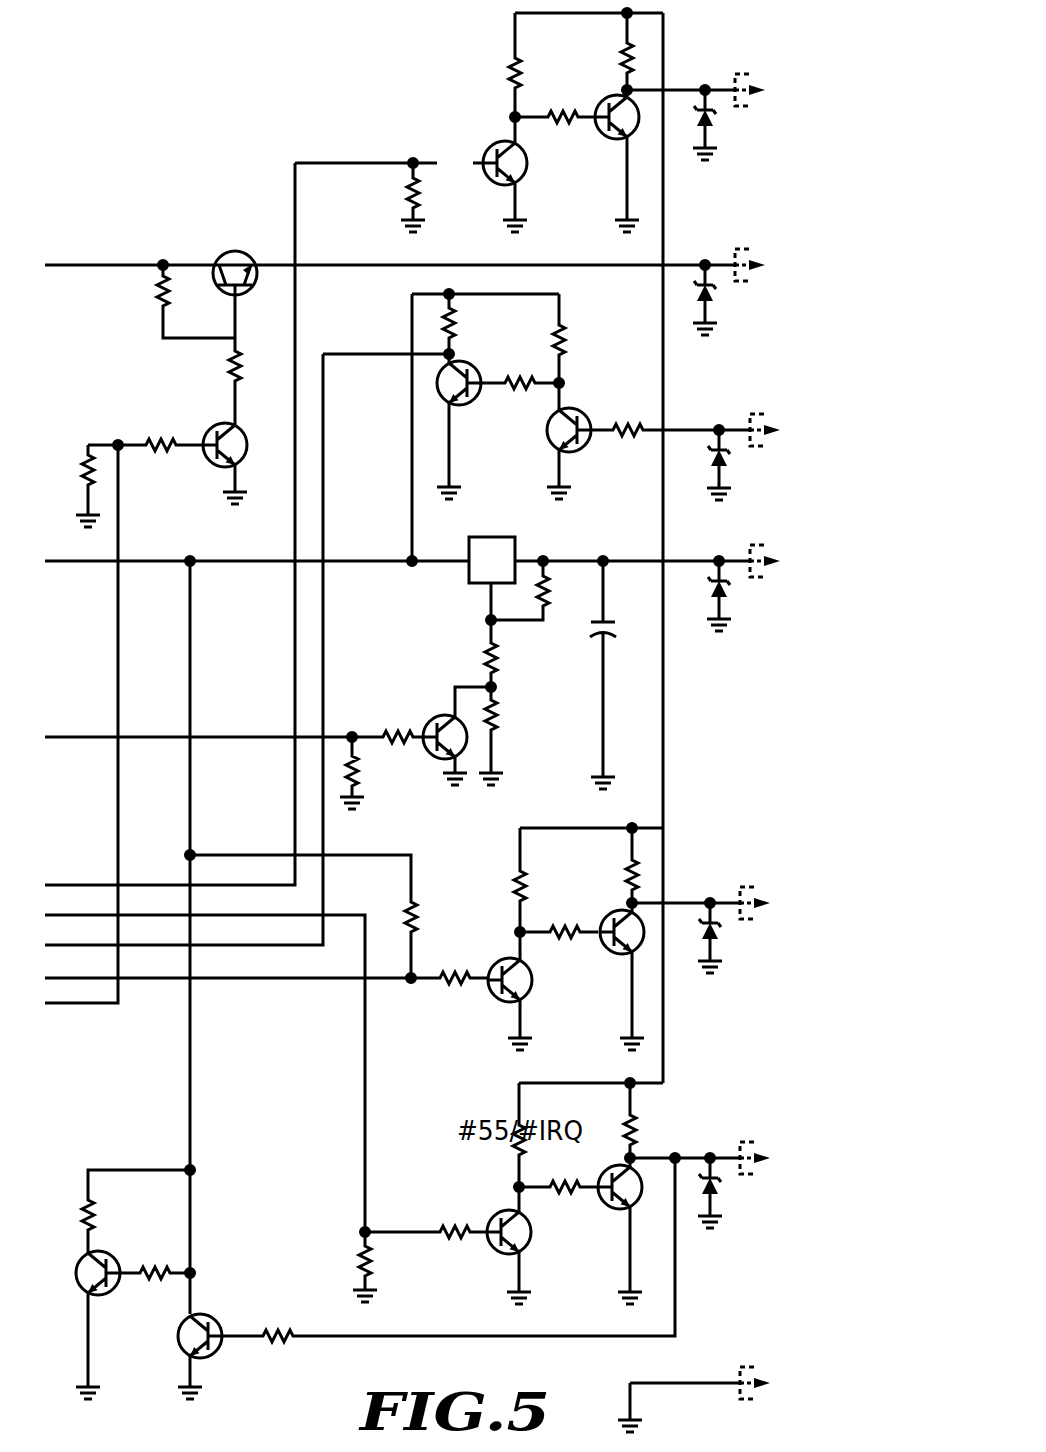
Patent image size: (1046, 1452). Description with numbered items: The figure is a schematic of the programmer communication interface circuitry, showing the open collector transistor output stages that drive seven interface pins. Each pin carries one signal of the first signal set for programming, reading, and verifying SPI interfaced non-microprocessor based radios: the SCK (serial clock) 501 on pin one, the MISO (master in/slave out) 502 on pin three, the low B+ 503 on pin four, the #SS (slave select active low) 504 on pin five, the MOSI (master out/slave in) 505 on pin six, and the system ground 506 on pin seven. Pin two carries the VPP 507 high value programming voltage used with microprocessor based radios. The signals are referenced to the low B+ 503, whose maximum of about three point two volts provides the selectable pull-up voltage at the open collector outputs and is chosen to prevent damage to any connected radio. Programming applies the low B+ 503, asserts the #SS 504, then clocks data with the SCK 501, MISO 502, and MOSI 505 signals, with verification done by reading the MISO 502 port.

The SCK (serial clock) signal 501 is at (746, 73).
The VPP (high value programming voltage) signal 507 is at (749, 251).
The MISO (master in/slave out) signal 502 is at (762, 414).
The low B+ signal 503 is at (762, 546).
The #SS (slave select active low) signal 504 is at (752, 889).
The MOSI (master out/slave in) signal 505 is at (752, 1144).
The system ground signal 506 is at (752, 1369).